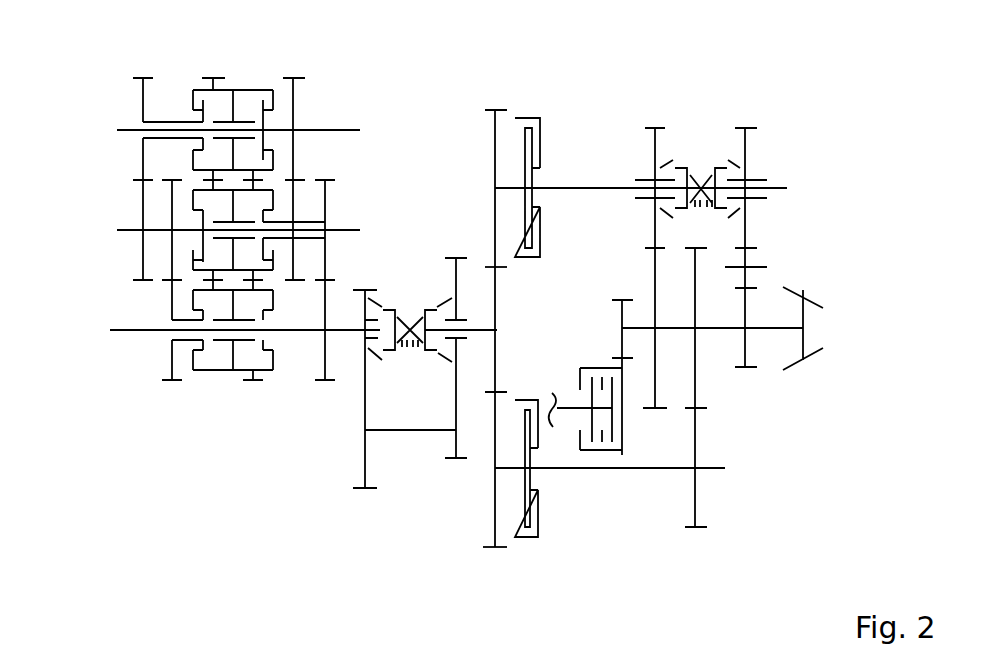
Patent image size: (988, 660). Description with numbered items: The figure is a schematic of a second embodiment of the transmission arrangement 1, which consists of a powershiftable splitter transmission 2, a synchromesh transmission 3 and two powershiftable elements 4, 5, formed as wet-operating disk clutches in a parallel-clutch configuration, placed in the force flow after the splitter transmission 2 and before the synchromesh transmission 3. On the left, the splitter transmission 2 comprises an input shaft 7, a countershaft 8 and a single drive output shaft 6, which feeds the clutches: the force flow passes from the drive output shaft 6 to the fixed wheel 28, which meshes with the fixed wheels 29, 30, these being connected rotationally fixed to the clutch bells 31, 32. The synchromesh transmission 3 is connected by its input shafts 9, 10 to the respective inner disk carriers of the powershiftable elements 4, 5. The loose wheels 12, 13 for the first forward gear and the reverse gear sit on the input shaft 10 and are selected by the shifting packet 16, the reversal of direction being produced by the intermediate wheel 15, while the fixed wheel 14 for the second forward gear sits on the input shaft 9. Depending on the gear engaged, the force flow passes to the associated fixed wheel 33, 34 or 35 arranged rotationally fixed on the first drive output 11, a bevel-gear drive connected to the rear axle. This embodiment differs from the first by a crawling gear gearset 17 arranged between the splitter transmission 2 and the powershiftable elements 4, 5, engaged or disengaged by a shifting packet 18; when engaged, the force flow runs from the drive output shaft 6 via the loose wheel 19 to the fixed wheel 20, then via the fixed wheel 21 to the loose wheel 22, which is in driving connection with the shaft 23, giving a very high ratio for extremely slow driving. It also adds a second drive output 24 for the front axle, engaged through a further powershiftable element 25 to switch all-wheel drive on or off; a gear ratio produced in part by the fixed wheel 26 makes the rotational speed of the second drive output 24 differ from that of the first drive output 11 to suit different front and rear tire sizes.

The transmission arrangement 1 is at (794, 106).
The splitter transmission 2 is at (198, 398).
The synchromesh transmission 3 is at (766, 490).
The powershiftable element 4 is at (514, 556).
The powershiftable element 5 is at (528, 105).
The drive output shaft 6 is at (125, 330).
The input shaft 7 is at (125, 230).
The countershaft 8 is at (125, 130).
The input shaft 9 is at (653, 473).
The input shaft 10 is at (618, 178).
The first drive output 11 is at (777, 328).
The loose wheel 12 is at (658, 153).
The loose wheel 13 is at (747, 152).
The fixed wheel 14 is at (703, 503).
The intermediate wheel 15 is at (747, 257).
The shifting packet 16 is at (706, 160).
The crawling gear gearset 17 is at (403, 275).
The shifting packet 18 is at (413, 305).
The loose wheel 19 is at (374, 302).
The fixed wheel 20 is at (365, 460).
The fixed wheel 21 is at (456, 440).
The loose wheel 22 is at (445, 368).
The shaft 23 is at (423, 355).
The second drive output 24 is at (563, 413).
The further powershiftable element 25 is at (593, 452).
The fixed wheel 26 is at (700, 312).
The fixed wheel 28 is at (497, 293).
The fixed wheel 29 is at (490, 510).
The fixed wheel 30 is at (492, 146).
The clutch bell 31 is at (540, 512).
The clutch bell 32 is at (541, 138).
The fixed wheel 33 is at (655, 360).
The fixed wheel 34 is at (695, 393).
The fixed wheel 35 is at (747, 347).